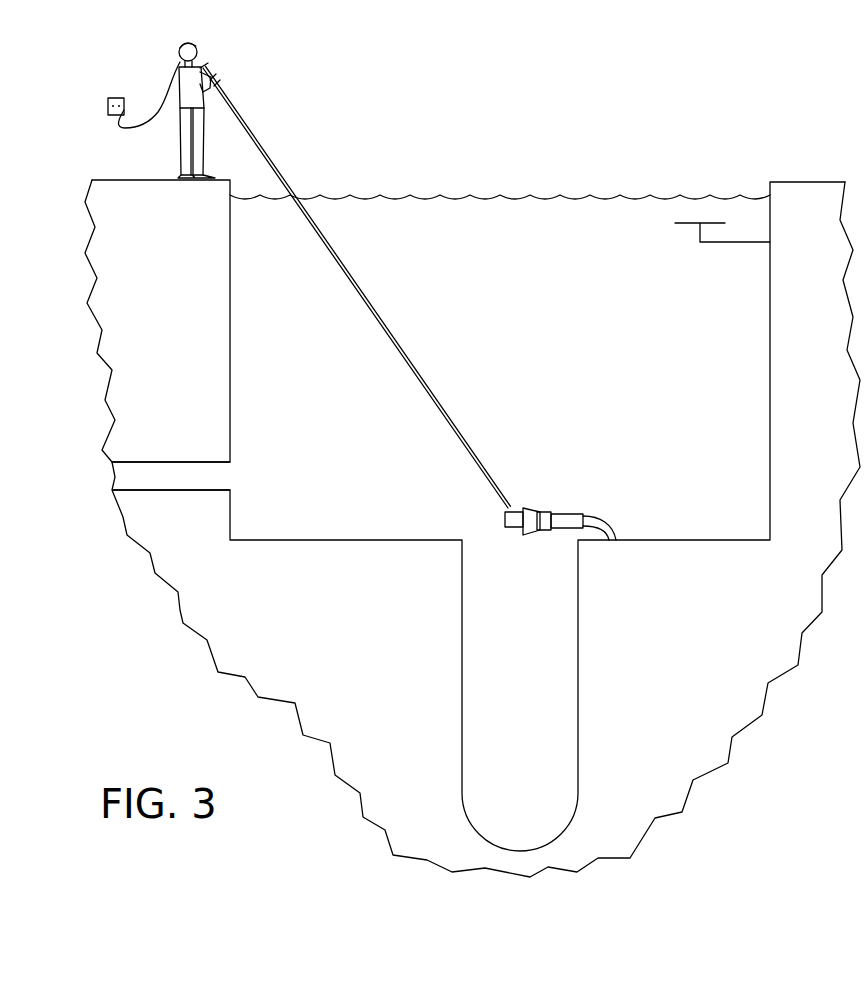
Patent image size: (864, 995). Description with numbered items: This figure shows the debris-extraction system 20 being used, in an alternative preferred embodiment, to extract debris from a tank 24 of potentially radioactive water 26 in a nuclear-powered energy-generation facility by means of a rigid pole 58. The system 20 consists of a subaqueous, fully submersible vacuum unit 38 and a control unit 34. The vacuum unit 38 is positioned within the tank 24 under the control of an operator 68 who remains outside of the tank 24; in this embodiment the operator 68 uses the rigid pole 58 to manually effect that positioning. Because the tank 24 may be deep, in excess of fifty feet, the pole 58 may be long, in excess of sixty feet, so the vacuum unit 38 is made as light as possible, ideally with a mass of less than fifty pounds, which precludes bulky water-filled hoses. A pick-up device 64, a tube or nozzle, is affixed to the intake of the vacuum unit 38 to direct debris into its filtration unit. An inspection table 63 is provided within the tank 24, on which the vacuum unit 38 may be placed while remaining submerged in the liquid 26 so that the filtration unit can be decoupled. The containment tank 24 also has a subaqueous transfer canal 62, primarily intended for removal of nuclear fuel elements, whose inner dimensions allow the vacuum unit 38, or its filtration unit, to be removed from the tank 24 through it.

The debris-extraction system 20 is at (370, 661).
The tank 24 is at (795, 69).
The water 26 is at (505, 205).
The control unit 34 is at (113, 98).
The vacuum unit 38 is at (559, 469).
The rigid pole 58 is at (405, 350).
The transfer canal 62 is at (176, 471).
The inspection table 63 is at (705, 223).
The pick-up device 64 is at (614, 524).
The operator 68 is at (181, 137).